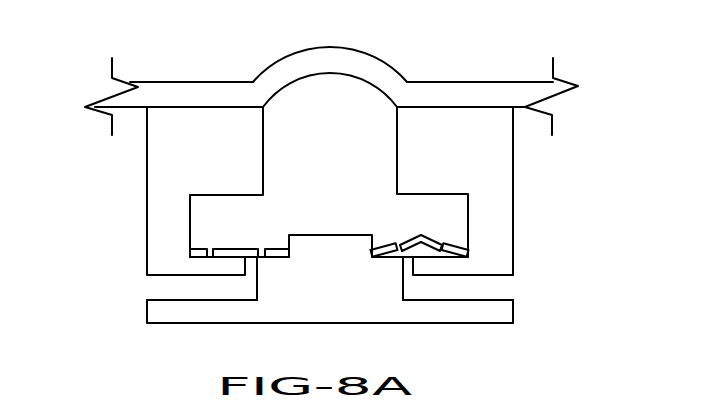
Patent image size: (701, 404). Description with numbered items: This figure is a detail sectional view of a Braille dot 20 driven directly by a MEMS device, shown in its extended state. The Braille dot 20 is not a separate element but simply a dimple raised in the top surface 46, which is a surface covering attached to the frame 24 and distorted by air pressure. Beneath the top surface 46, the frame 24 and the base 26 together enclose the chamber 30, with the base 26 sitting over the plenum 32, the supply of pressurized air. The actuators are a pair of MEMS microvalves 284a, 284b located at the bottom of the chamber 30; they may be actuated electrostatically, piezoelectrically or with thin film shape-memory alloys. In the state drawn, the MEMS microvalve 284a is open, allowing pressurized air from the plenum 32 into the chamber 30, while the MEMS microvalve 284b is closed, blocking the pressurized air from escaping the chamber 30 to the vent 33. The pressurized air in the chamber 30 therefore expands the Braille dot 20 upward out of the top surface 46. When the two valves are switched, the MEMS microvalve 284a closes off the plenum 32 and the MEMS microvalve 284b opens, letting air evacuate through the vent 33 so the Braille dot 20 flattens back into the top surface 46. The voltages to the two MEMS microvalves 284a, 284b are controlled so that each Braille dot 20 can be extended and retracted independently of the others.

The Braille dot 20 is at (381, 60).
The top surface 46 is at (190, 82).
The frame 24 is at (147, 158).
The chamber 30 is at (418, 193).
The base 26 is at (147, 311).
The vent 33 is at (173, 300).
The plenum 32 is at (475, 300).
The MEMS microvalve 284b is at (240, 248).
The MEMS microvalve 284a is at (432, 239).